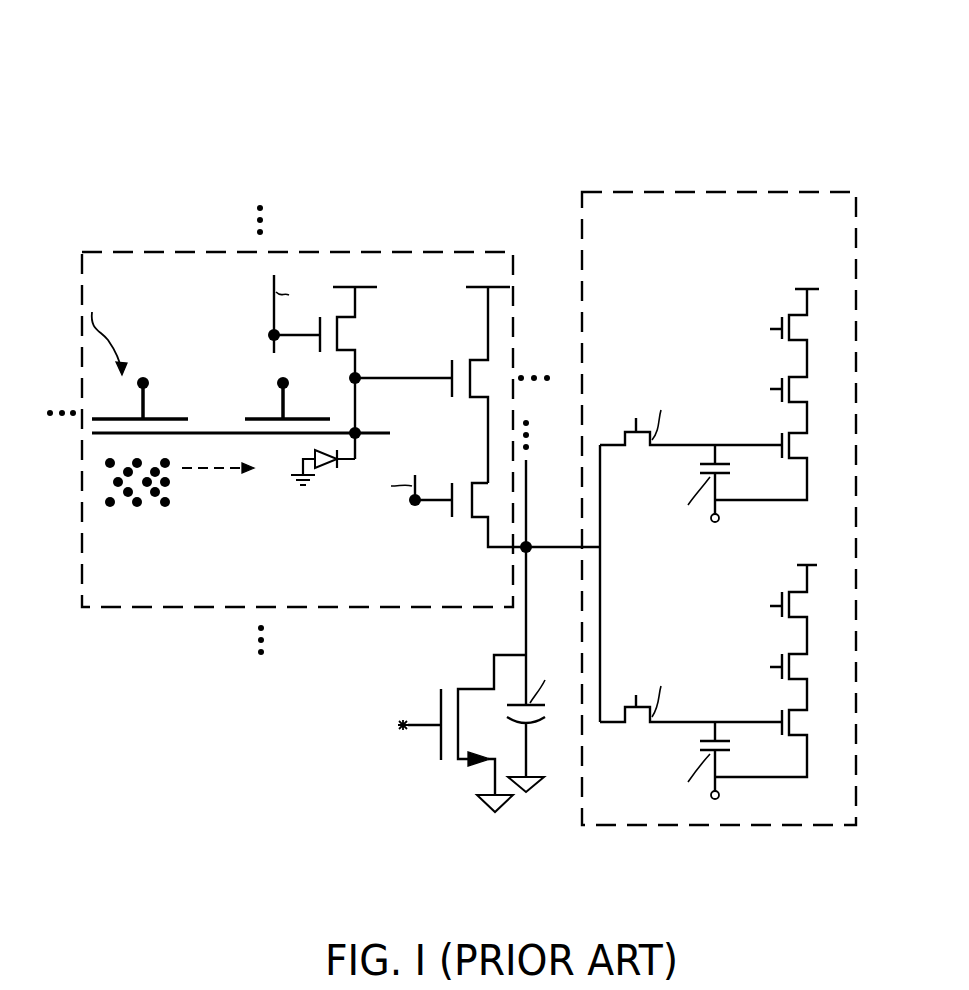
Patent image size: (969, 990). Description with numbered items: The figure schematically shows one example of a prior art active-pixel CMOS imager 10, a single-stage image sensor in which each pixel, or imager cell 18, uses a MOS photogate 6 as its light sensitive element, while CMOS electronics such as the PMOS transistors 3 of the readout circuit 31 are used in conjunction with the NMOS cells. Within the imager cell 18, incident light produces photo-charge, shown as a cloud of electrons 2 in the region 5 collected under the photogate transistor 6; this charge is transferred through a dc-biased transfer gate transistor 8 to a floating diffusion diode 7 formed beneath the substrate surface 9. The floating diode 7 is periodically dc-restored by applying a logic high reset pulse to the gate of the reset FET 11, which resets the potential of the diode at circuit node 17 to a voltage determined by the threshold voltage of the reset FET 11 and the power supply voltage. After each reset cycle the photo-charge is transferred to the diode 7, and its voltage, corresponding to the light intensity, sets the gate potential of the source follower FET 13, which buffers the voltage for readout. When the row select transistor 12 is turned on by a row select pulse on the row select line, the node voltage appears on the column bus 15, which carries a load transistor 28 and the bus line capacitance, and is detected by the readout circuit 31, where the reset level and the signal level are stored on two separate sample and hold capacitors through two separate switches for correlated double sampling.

The imager 10 is at (560, 112).
The imager cell 18 is at (268, 251).
The readout circuit 31 is at (762, 191).
The photo-generated electrons 2 is at (150, 520).
The photosensitive substrate region 5 is at (248, 544).
The photogate transistor 6 is at (165, 418).
The floating diffusion diode 7 is at (325, 470).
The transfer gate transistor 8 is at (297, 418).
The substrate surface 9 is at (195, 433).
The reset FET 11 is at (342, 340).
The row select transistor 12 is at (472, 483).
The source follower FET 13 is at (453, 398).
The column bus 15 is at (527, 497).
The circuit node 17 is at (358, 383).
The load transistor 28 is at (437, 745).
The transistors 3 is at (805, 447).